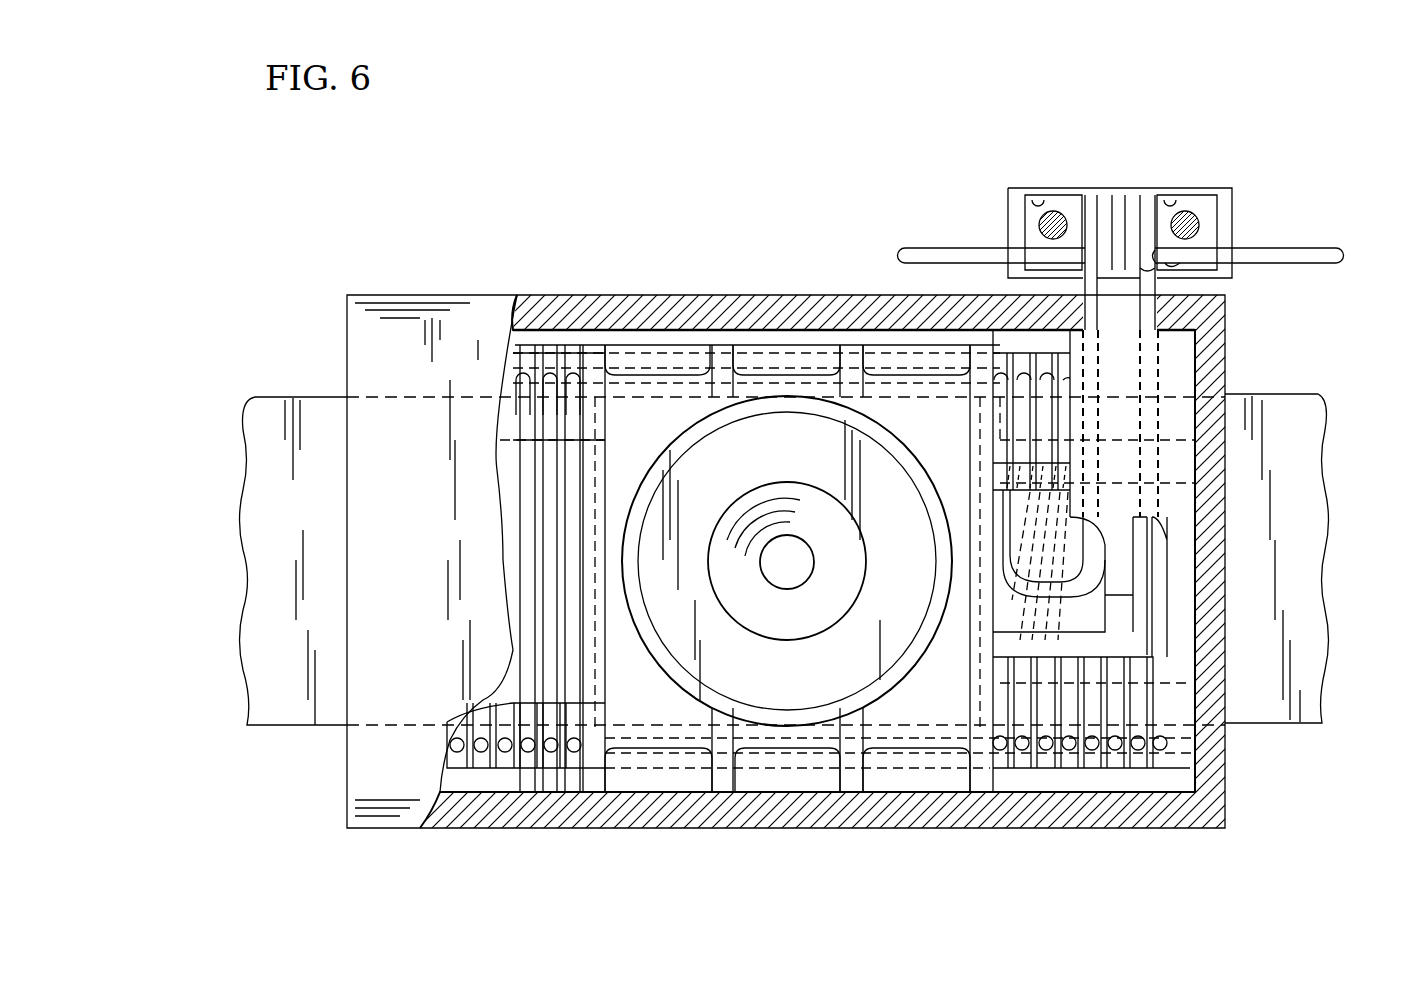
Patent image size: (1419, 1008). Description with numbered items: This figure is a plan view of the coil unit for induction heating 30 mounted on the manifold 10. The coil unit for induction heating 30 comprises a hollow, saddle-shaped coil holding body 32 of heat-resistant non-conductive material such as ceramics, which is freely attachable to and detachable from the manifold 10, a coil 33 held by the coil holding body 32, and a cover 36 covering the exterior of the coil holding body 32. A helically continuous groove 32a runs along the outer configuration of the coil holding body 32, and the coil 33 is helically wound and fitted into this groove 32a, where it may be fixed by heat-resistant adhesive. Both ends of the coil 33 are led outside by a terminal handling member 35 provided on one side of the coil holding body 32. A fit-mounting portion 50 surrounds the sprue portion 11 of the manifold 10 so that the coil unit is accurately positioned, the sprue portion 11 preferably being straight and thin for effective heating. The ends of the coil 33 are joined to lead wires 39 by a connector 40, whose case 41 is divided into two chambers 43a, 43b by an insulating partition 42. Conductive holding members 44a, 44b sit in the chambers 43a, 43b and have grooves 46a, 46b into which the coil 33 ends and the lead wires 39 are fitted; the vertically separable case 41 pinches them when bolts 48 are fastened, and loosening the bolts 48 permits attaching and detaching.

The manifold 10 is at (1250, 712).
The sprue portion 11 is at (783, 453).
The coil unit for induction heating 30 is at (424, 268).
The coil holding body 32 is at (905, 748).
The groove 32a is at (1038, 705).
The coil 33 is at (500, 877).
The terminal handling member 35 is at (1118, 487).
The cover 36 is at (478, 350).
The lead wires 39 is at (925, 248).
The connector 40 is at (1250, 224).
The case 41 is at (1010, 227).
The insulating partition 42 is at (1120, 218).
The chamber 43a is at (1038, 208).
The chamber 43b is at (1173, 203).
The holding member 44a is at (1068, 205).
The holding member 44b is at (1207, 208).
The groove 46a is at (1193, 253).
The groove 46b is at (1147, 268).
The bolts 48 is at (1056, 212).
The fit-mounting portion 50 is at (678, 448).